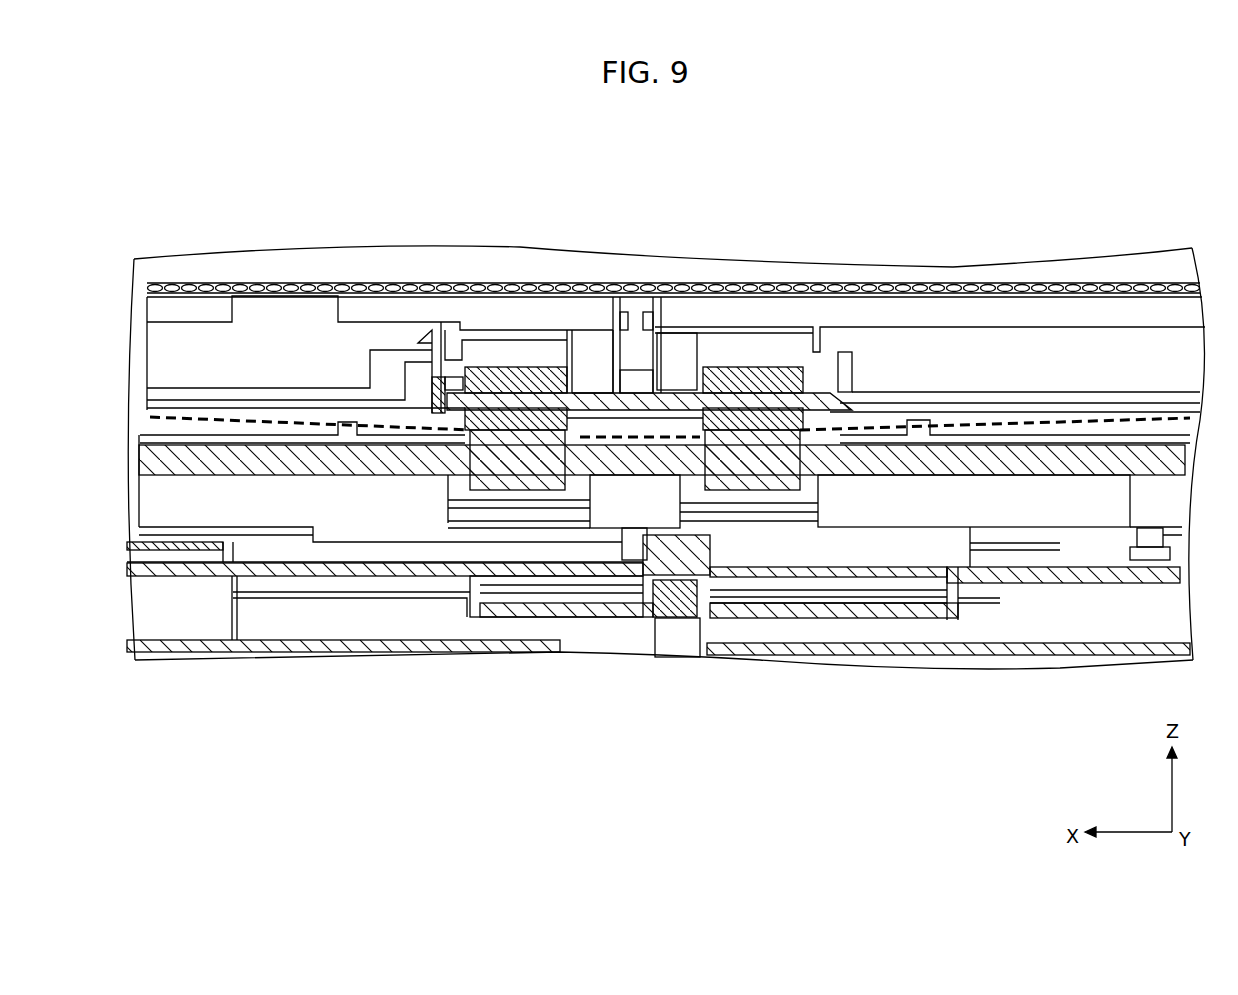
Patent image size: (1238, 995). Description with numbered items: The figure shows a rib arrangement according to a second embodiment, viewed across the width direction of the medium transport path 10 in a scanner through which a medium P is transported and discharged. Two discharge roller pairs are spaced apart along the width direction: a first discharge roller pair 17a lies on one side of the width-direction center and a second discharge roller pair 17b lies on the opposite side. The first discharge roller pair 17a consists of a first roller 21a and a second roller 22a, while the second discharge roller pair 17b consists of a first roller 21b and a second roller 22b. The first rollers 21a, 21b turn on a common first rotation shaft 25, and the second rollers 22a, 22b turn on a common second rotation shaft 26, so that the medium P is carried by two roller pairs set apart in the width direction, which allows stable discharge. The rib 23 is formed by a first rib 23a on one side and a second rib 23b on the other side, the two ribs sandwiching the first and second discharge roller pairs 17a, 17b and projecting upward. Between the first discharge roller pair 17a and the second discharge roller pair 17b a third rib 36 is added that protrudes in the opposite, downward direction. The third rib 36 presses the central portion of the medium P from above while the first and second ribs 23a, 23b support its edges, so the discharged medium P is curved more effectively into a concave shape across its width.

The medium transport path 10 is at (143, 330).
The medium P is at (247, 400).
The first discharge roller pair 17a is at (514, 321).
The second discharge roller pair 17b is at (731, 316).
The first roller 21a is at (495, 410).
The second roller 22a is at (524, 368).
The first roller 21b is at (720, 436).
The second roller 22b is at (764, 367).
The first rotation shaft 25 is at (676, 438).
The second rotation shaft 26 is at (583, 392).
The third rib 36 is at (630, 370).
The rib 23 is at (662, 586).
The first rib 23a is at (348, 425).
The second rib 23b is at (921, 436).